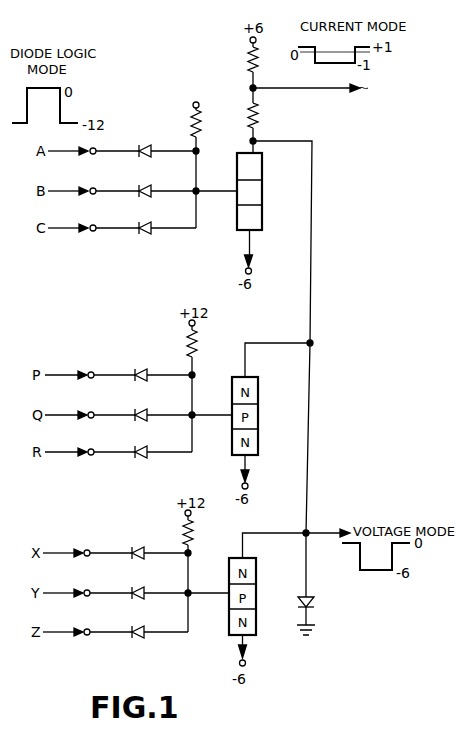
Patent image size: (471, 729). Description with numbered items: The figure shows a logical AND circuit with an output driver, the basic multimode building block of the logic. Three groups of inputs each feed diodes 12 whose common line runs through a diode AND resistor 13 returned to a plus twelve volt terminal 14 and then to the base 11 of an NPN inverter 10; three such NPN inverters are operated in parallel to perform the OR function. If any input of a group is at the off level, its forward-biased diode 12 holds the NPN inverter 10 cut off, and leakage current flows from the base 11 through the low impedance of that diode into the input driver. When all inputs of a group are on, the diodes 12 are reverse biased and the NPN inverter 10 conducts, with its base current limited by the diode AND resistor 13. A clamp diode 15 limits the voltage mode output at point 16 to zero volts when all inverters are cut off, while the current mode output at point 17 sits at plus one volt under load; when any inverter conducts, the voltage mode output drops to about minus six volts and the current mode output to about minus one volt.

The NPN inverter 10 is at (266, 192).
The base 11 is at (237, 198).
The diode 12 is at (147, 195).
The diode AND resistor 13 is at (192, 121).
The +12 volt terminal 14 is at (199, 105).
The clamp diode 15 is at (313, 602).
The voltage mode output point 16 is at (305, 534).
The current mode output point 17 is at (254, 88).